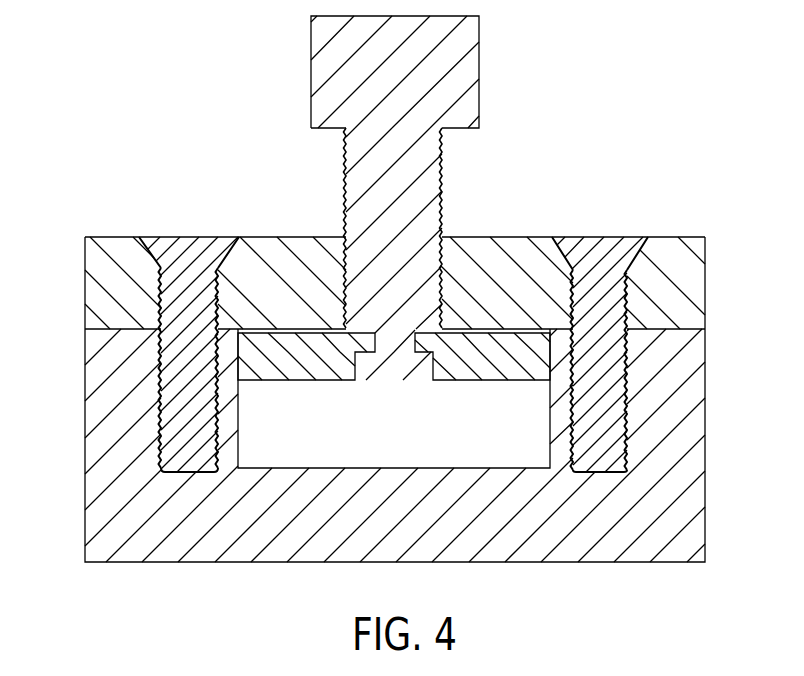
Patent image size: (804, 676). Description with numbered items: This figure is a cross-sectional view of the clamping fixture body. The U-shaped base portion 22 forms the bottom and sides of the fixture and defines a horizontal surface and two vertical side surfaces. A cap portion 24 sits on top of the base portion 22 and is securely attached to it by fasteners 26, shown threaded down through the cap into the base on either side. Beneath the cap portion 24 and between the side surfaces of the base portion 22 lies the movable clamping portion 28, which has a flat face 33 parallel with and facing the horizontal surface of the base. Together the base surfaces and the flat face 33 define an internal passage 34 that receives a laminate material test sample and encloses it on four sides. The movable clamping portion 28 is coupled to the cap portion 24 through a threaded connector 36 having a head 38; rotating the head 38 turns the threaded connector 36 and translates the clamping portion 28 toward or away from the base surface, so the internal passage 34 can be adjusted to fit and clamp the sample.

The U-shaped base portion 22 is at (97, 488).
The cap portion 24 is at (85, 280).
The fasteners 26 is at (600, 237).
The movable clamping portion 28 is at (330, 380).
The flat face 33 is at (458, 380).
The internal passage 34 is at (373, 468).
The threaded connector 36 is at (347, 173).
The head 38 is at (480, 67).